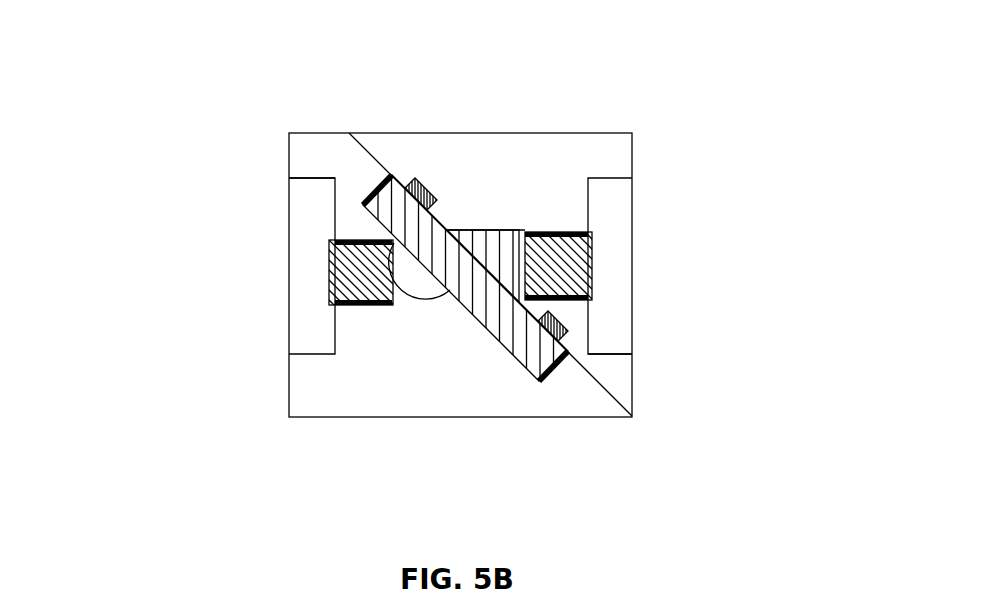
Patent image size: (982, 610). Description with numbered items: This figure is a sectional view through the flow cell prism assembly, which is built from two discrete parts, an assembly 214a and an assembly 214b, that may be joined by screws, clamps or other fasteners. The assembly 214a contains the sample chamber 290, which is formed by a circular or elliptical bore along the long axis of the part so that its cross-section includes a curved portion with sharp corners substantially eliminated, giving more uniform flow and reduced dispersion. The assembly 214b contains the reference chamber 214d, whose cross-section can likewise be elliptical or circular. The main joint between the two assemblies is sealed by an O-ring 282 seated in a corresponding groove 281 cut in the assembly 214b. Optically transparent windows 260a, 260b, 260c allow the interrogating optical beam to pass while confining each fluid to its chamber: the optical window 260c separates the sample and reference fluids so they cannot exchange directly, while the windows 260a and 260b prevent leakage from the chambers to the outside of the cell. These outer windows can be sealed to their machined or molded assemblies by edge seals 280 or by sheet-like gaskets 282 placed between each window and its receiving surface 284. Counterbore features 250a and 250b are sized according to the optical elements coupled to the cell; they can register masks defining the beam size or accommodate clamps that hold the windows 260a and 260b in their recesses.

The counterbore feature 250a is at (185, 231).
The counterbore feature 250b is at (737, 266).
The assembly 214a is at (349, 177).
The assembly 214b is at (618, 374).
The reference chamber 214d is at (505, 253).
The optically transparent window 260a is at (269, 319).
The optically transparent window 260b is at (645, 223).
The optical window 260c is at (568, 202).
The edge seal 280 is at (373, 316).
The O-ring / sheet-like gasket 282 is at (556, 246).
The groove 281 is at (559, 112).
The receiving surface 284 is at (489, 390).
The sample chamber 290 is at (356, 379).